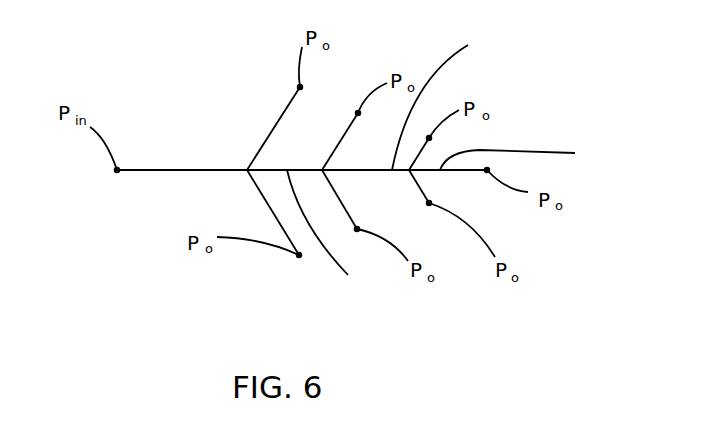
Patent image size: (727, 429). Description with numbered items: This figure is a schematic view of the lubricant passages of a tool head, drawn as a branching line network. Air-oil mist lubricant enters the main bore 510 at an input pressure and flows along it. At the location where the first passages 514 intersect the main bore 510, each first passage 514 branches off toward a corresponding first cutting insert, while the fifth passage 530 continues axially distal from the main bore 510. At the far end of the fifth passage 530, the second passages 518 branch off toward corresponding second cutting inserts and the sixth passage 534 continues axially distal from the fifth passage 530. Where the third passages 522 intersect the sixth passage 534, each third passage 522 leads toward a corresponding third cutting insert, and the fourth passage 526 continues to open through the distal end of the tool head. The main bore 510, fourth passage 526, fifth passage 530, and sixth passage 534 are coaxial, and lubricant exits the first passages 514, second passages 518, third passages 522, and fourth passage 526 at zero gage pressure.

The main bore 510 is at (223, 170).
The first passages 514 is at (282, 115).
The second passages 518 is at (340, 141).
The third passages 522 is at (420, 150).
The fourth passage 526 is at (528, 156).
The fifth passage 530 is at (337, 233).
The sixth passage 534 is at (448, 98).